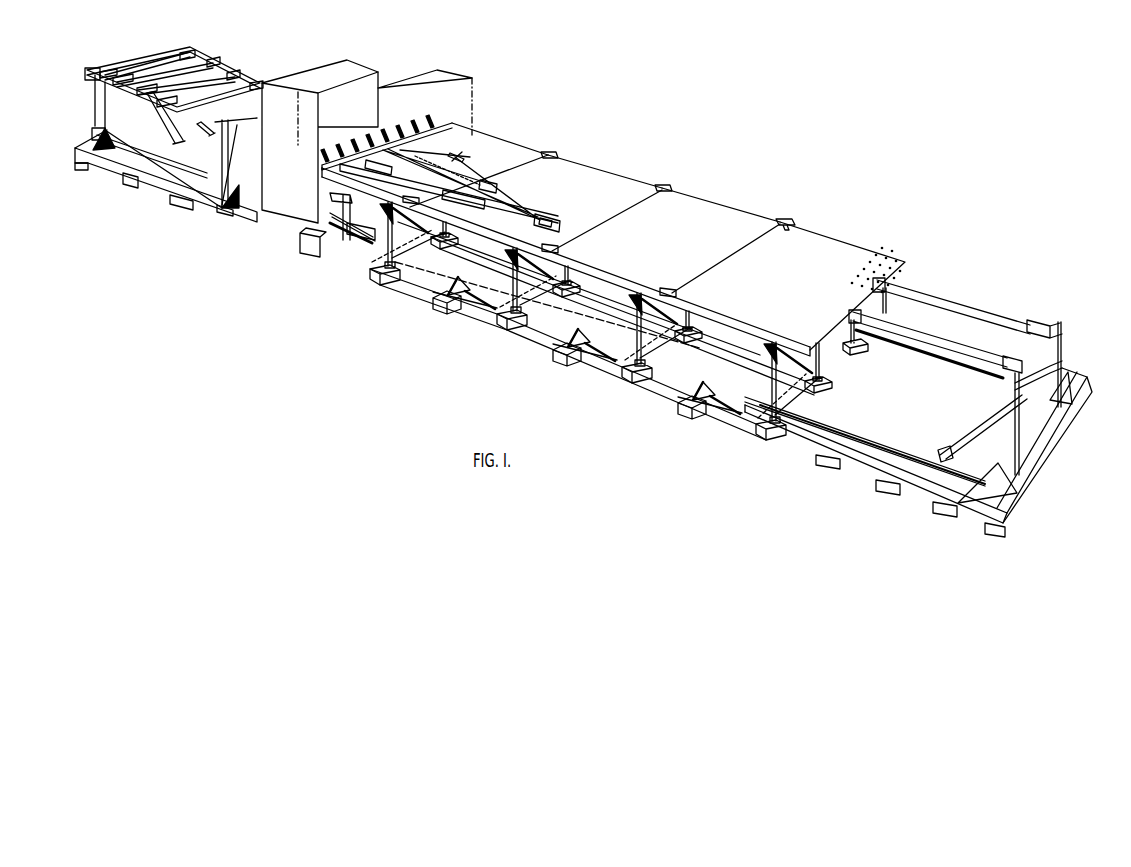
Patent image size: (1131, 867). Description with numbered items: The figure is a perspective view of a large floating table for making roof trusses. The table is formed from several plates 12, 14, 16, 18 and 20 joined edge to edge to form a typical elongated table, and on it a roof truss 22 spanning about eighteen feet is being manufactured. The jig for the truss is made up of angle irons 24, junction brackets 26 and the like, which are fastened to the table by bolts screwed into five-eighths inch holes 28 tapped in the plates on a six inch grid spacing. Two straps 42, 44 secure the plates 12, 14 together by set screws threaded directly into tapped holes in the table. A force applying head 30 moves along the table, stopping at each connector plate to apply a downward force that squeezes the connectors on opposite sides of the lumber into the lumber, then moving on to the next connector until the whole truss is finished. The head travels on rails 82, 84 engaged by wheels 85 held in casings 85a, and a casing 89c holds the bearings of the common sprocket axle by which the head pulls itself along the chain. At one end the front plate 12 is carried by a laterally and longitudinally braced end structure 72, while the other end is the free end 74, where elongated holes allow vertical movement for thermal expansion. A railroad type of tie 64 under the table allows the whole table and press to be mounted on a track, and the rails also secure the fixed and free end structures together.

The free end 74 is at (265, 40).
The plate 20 is at (246, 118).
The force applying head 30 is at (468, 95).
The plate 18 is at (499, 142).
The plate 16 is at (580, 167).
The plate 14 is at (717, 203).
The front plate 12 is at (822, 236).
The holes 28 is at (877, 254).
The strap 44 is at (788, 228).
The roof truss 22 is at (525, 190).
The angle irons 24 is at (479, 211).
The junction brackets 26 is at (452, 158).
The wheels 85 is at (318, 244).
The casings 85a is at (352, 244).
The casing 89c is at (320, 222).
The tie 64 is at (704, 408).
The rail 84 is at (697, 379).
The strap 42 is at (679, 297).
The end structure 72 is at (980, 282).
The rail 82 is at (918, 354).